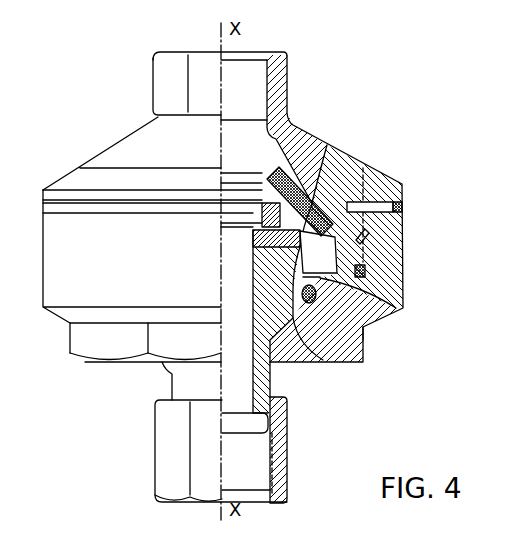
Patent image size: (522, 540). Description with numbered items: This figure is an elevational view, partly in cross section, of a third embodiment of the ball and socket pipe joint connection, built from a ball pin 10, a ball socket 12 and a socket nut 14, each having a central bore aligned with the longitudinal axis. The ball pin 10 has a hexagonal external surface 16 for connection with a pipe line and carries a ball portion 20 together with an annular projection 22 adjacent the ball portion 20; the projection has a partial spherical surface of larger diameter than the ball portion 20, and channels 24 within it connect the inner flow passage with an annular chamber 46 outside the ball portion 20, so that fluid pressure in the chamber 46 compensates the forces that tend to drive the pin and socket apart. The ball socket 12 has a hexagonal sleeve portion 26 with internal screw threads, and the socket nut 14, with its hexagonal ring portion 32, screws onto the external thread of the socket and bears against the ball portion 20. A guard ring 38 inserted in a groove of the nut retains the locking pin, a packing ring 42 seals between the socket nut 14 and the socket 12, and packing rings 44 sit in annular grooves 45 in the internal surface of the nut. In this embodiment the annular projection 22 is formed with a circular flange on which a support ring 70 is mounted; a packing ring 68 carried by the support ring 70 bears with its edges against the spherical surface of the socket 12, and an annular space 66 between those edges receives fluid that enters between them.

The ball pin 10 is at (283, 462).
The ball socket 12 is at (305, 137).
The socket nut 14 is at (338, 333).
The hexagonal external surface 16 is at (165, 475).
The ball portion 20 is at (258, 295).
The annular projection 22 is at (322, 200).
The channels 24 is at (257, 248).
The hexagonal sleeve portion 26 is at (162, 76).
The hexagonal ring portion 32 is at (76, 340).
The guard ring 38 is at (403, 207).
The packing ring 42 is at (366, 272).
The packing rings 44 is at (364, 327).
The annular grooves 45 is at (400, 308).
The annular chamber 46 is at (337, 247).
The annular space 66 is at (327, 145).
The packing ring 68 is at (272, 167).
The support ring 70 is at (280, 203).